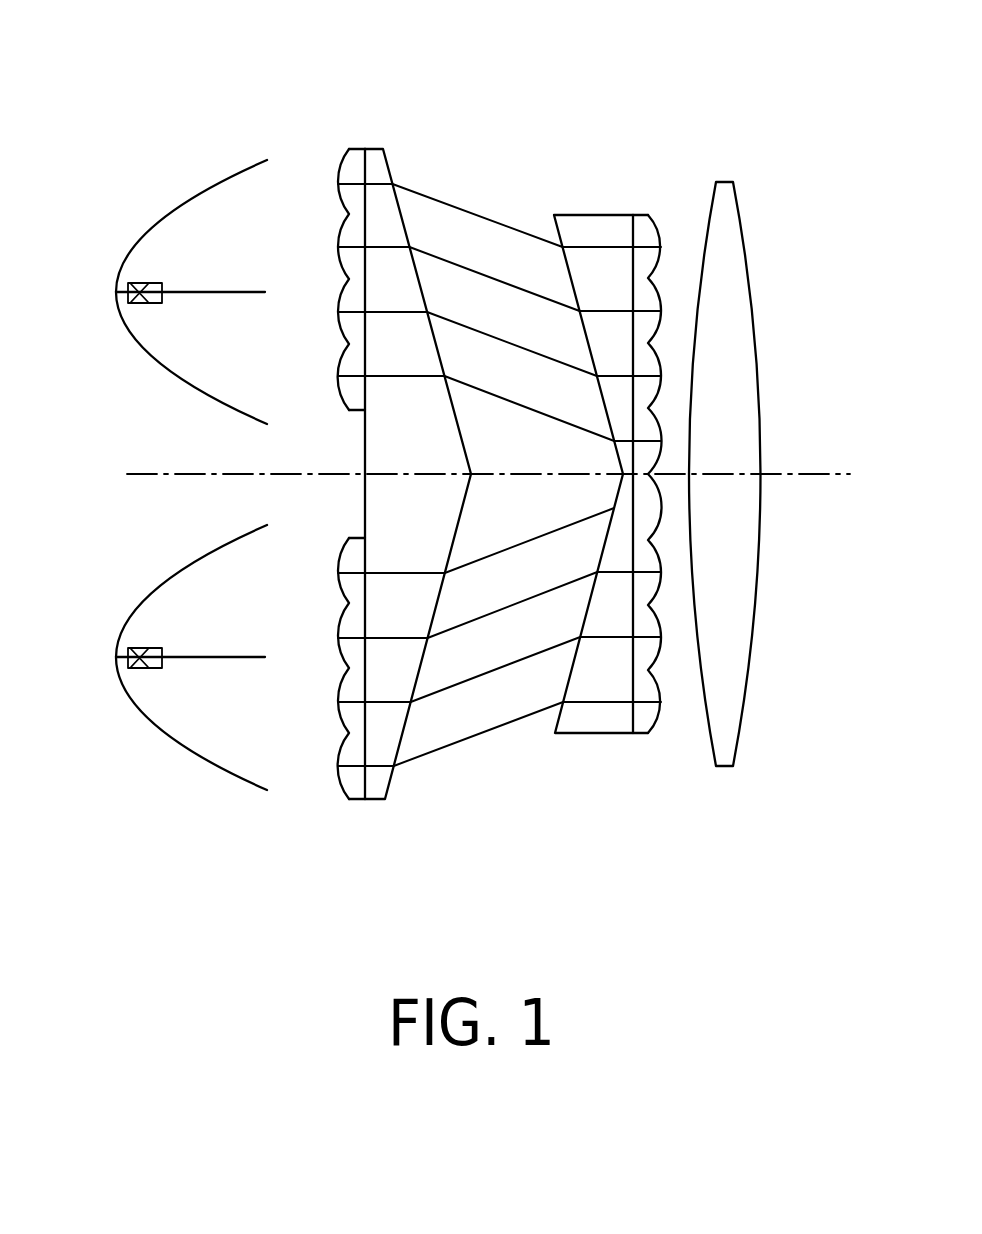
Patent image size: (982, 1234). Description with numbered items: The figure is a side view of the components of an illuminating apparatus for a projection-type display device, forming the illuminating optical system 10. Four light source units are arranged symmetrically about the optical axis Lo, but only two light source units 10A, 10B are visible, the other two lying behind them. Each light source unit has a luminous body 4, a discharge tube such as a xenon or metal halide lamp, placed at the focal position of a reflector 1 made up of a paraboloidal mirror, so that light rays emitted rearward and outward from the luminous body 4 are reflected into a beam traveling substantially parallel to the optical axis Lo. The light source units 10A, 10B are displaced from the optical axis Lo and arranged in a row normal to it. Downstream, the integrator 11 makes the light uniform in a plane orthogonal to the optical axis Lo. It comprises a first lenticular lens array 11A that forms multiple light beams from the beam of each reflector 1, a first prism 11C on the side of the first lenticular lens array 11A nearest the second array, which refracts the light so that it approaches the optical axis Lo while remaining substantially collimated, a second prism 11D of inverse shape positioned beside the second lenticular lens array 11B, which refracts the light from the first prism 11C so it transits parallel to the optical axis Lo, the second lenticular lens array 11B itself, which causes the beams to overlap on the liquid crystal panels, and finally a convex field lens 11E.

The reflector 1 is at (236, 175).
The luminous body 4 is at (148, 282).
The illuminating optical system 10 is at (96, 258).
The light source unit 10A is at (157, 372).
The light source unit 10B is at (157, 738).
The integrator 11 is at (533, 72).
The first lenticular lens array 11A is at (346, 147).
The second lenticular lens array 11B is at (657, 220).
The first prism 11C is at (388, 159).
The second prism 11D is at (580, 213).
The convex field lens 11E is at (733, 182).
The optical axis Lo is at (790, 470).